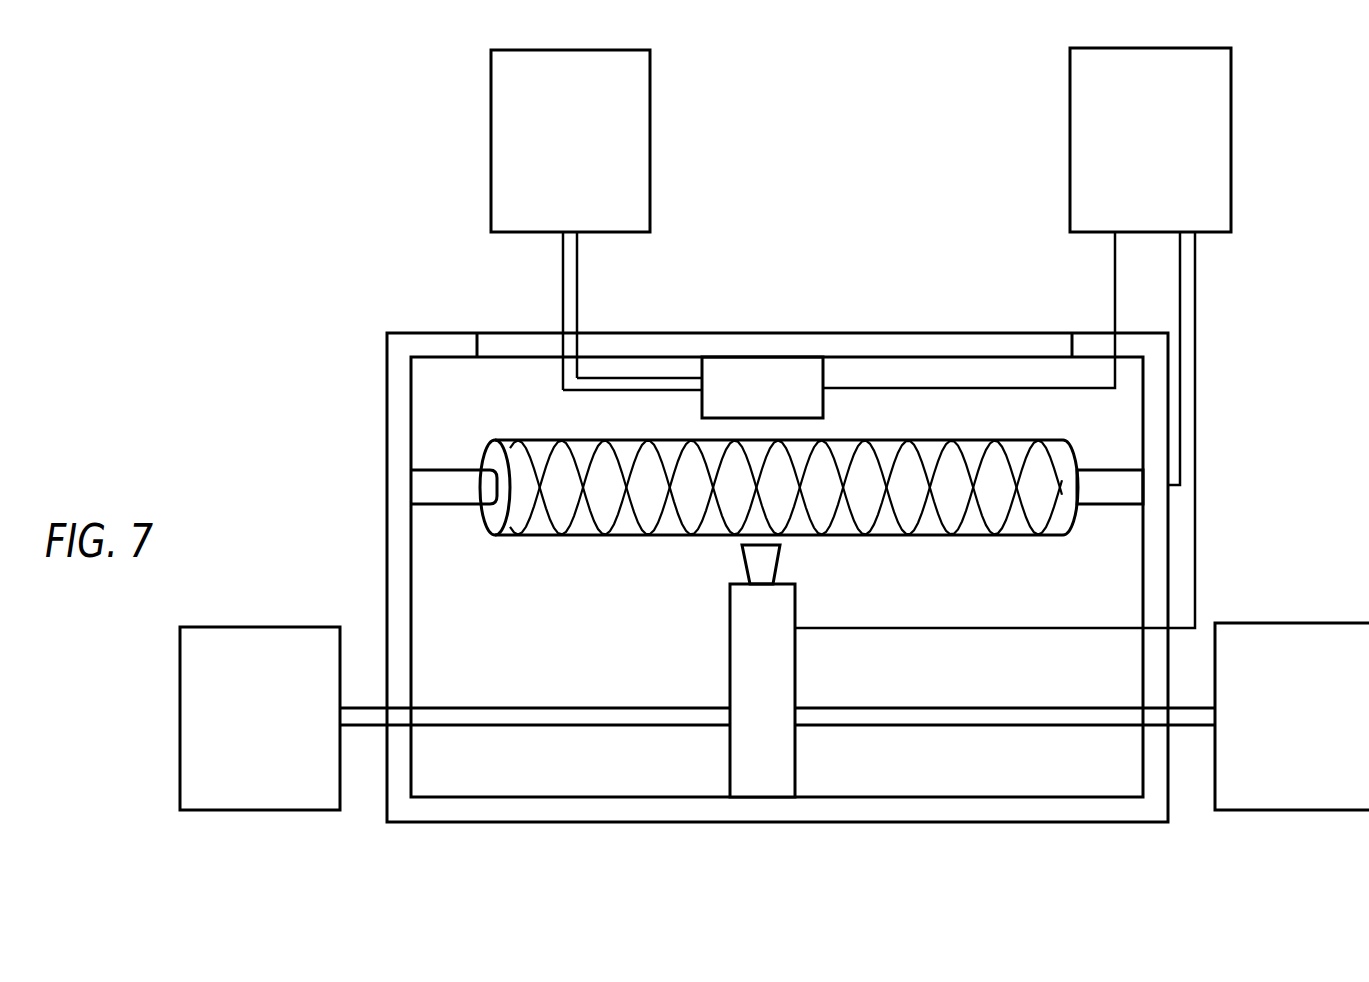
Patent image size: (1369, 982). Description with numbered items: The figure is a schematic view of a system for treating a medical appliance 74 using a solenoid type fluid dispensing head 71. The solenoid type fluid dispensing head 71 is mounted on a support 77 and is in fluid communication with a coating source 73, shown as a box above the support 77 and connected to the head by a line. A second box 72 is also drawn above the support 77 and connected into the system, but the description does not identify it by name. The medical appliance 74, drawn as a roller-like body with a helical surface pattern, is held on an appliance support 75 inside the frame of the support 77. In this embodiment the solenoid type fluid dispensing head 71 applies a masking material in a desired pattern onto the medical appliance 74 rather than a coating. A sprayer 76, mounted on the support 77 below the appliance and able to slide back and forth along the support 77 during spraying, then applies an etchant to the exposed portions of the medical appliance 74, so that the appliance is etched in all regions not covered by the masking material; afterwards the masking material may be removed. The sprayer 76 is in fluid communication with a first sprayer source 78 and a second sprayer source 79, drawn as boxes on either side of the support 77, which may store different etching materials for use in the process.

The solenoid type fluid dispensing head 71 is at (748, 402).
The control unit 72 is at (1137, 157).
The coating source 73 is at (556, 157).
The medical appliance 74 is at (603, 490).
The appliance support 75 is at (453, 477).
The sprayer 76 is at (749, 733).
The support 77 is at (545, 815).
The first sprayer source 78 is at (246, 735).
The second sprayer source 79 is at (1283, 733).